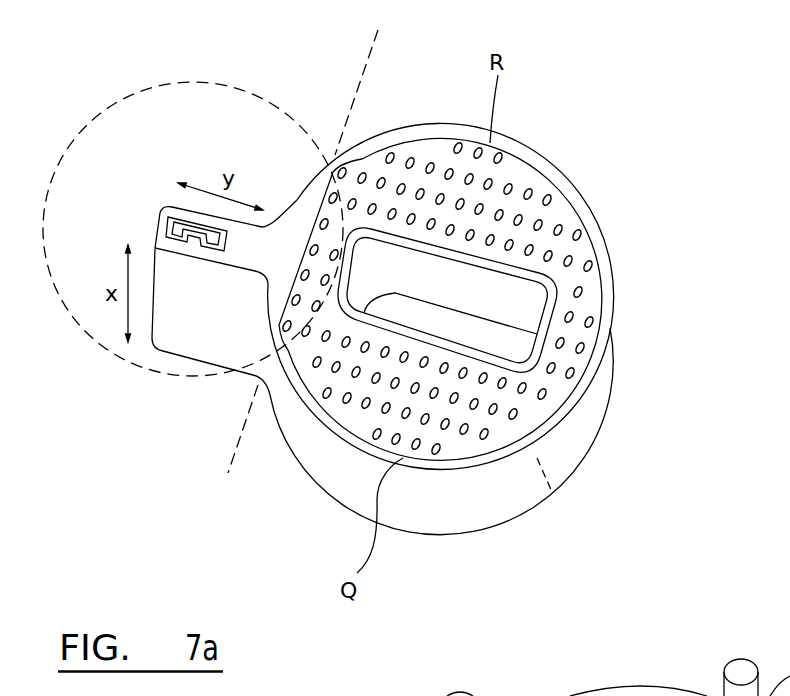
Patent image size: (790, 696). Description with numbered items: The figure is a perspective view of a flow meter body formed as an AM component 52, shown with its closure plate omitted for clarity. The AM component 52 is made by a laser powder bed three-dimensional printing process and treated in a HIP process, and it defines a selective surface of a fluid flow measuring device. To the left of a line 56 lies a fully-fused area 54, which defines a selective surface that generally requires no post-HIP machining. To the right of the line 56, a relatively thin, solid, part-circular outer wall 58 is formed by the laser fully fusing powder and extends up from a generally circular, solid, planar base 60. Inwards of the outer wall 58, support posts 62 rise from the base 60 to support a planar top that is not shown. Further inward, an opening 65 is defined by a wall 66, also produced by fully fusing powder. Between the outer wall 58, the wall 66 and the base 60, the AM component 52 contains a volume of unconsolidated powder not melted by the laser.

The AM component 52 is at (620, 247).
The fully-fused area 54 is at (208, 322).
The line 56 is at (240, 440).
The outer wall 58 is at (495, 488).
The base 60 is at (552, 493).
The support posts 62 is at (543, 397).
The opening 65 is at (493, 297).
The wall 66 is at (395, 347).